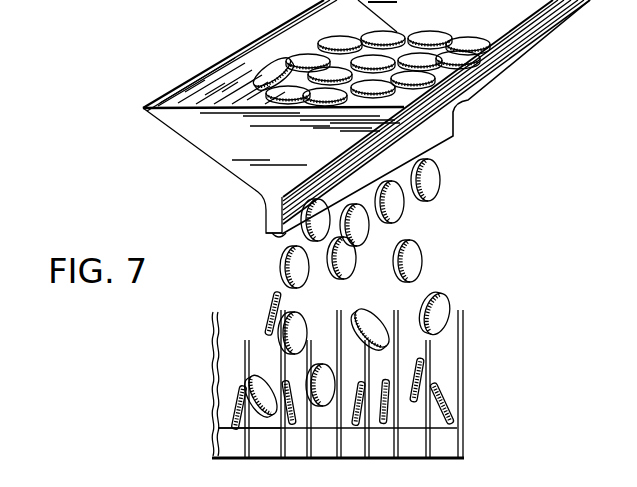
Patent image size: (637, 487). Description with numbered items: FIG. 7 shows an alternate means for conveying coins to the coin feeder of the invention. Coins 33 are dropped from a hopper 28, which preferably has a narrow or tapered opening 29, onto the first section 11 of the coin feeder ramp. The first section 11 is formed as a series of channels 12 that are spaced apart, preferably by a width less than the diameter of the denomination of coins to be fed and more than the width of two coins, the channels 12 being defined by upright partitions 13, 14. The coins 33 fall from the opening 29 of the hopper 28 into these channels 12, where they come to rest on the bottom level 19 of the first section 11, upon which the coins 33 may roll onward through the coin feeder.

The first section 11 is at (480, 368).
The channels 12 is at (263, 348).
The tall partitions 13 is at (461, 340).
The short partitions 14 is at (433, 360).
The bottom level 19 is at (413, 426).
The hopper 28 is at (196, 146).
The opening 29 is at (264, 237).
The coins 33 is at (271, 70).